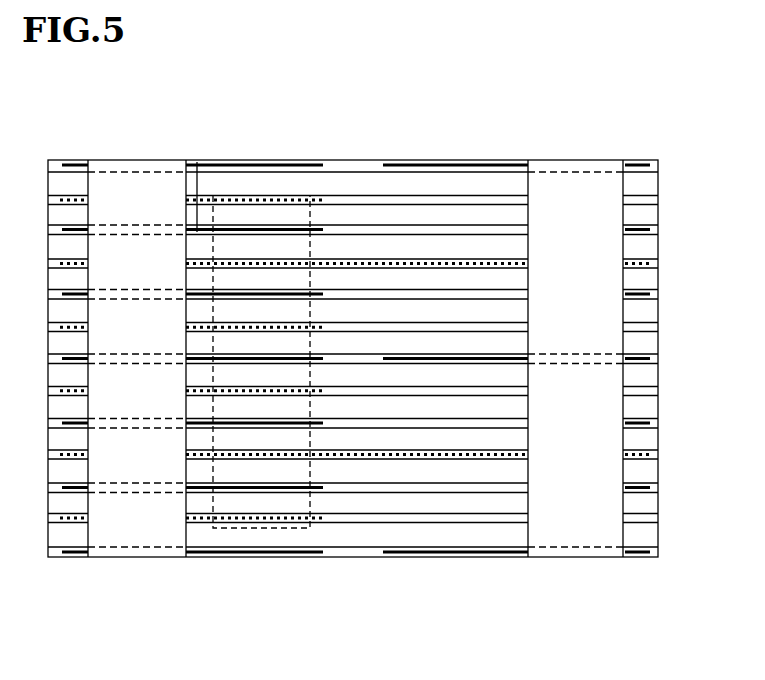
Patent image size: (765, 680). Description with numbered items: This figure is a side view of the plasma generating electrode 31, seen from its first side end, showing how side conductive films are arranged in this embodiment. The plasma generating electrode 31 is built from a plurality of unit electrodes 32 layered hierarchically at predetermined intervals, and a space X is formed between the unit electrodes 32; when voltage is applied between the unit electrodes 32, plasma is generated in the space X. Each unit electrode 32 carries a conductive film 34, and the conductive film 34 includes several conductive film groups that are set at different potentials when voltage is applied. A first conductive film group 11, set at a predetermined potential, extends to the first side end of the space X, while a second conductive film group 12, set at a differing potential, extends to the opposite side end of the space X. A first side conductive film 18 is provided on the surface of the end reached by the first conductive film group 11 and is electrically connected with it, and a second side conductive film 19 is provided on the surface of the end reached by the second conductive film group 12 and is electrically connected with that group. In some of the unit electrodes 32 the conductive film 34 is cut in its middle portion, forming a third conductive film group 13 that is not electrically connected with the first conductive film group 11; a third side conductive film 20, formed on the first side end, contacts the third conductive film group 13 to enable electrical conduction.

The first side conductive film 18 is at (120, 188).
The first conductive film group 11 is at (197, 232).
The second conductive film group 12 is at (350, 170).
The conductive film 34 is at (405, 195).
The third conductive film group 13 is at (455, 355).
The plasma generating electrode 31 is at (697, 110).
The unit electrode 32 is at (204, 532).
The second side conductive film 19 is at (310, 508).
The space X is at (438, 542).
The third side conductive film 20 is at (575, 545).